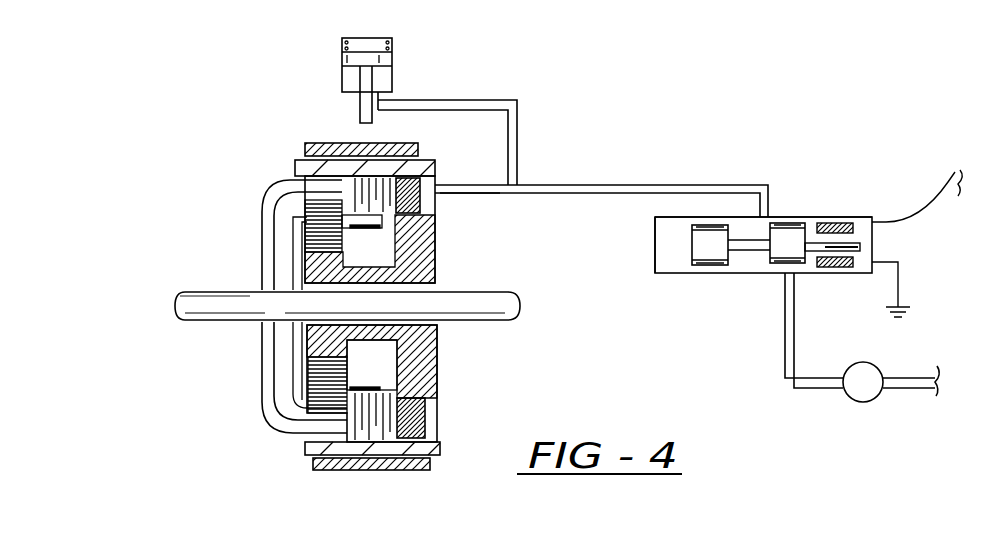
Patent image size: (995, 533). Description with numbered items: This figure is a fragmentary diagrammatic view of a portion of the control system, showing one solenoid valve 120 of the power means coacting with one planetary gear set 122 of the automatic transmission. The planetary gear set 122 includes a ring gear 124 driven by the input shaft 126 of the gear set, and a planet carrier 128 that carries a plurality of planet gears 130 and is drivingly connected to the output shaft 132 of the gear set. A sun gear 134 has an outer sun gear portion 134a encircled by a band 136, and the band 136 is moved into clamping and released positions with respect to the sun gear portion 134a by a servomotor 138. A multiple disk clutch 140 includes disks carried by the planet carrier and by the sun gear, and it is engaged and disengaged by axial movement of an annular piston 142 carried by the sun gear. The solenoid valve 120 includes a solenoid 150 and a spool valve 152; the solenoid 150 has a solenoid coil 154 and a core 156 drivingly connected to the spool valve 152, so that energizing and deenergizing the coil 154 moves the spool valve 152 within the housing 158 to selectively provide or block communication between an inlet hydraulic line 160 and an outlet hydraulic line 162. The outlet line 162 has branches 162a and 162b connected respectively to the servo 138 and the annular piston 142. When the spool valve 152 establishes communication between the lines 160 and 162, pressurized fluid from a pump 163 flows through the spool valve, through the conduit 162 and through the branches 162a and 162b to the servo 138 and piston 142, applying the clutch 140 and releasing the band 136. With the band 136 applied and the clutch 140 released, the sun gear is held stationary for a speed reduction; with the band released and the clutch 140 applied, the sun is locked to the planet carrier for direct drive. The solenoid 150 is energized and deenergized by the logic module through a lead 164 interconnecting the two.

The solenoid valve 120 is at (802, 199).
The planetary gear set 122 is at (226, 240).
The ring gear 124 is at (287, 195).
The input shaft 126 is at (210, 300).
The planet carrier 128 is at (287, 343).
The planet gears 130 is at (343, 368).
The output shaft 132 is at (508, 297).
The sun gear 134 is at (437, 263).
The outer sun gear portion 134a is at (443, 146).
The band 136 is at (313, 143).
The servomotor 138 is at (391, 50).
The multiple disk clutch 140 is at (377, 442).
The annular piston 142 is at (433, 233).
The solenoid 150 is at (832, 217).
The spool valve 152 is at (690, 248).
The solenoid coil 154 is at (830, 268).
The core 156 is at (860, 247).
The housing 158 is at (655, 250).
The inlet hydraulic line 160 is at (788, 358).
The outlet hydraulic line 162 is at (648, 185).
The branch 162a is at (492, 108).
The branch 162b is at (500, 189).
The pump 163 is at (873, 401).
The lead 164 is at (938, 190).